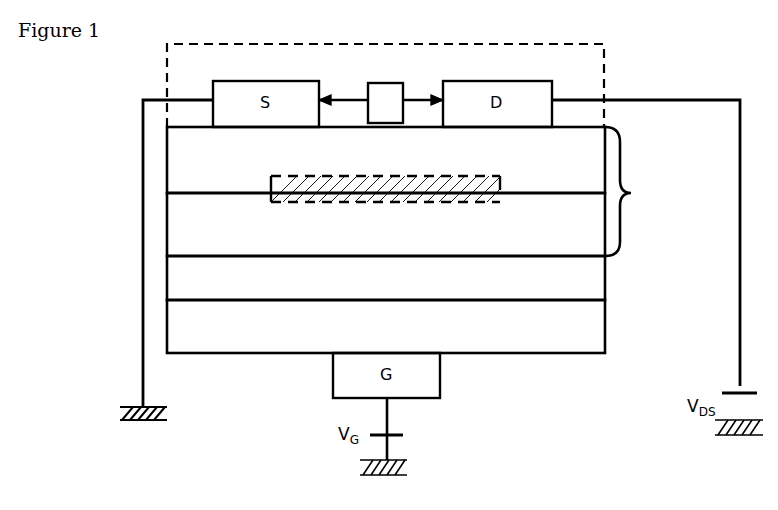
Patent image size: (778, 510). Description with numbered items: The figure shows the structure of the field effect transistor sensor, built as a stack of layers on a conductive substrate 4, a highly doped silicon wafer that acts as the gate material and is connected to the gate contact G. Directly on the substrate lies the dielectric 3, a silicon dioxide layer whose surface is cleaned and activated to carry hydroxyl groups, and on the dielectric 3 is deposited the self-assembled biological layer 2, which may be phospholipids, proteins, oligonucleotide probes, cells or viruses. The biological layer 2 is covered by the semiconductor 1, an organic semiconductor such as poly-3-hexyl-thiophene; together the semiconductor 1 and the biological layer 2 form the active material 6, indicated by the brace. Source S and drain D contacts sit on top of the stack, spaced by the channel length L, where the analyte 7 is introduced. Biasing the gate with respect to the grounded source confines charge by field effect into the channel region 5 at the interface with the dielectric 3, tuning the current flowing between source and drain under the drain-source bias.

The semiconductor 1 is at (386, 160).
The self-assembled biological layer 2 is at (386, 224).
The dielectric 3 is at (386, 278).
The conductive substrate 4 is at (386, 326).
The channel region 5 is at (500, 202).
The active material 6 is at (628, 191).
The analyte 7 is at (381, 89).